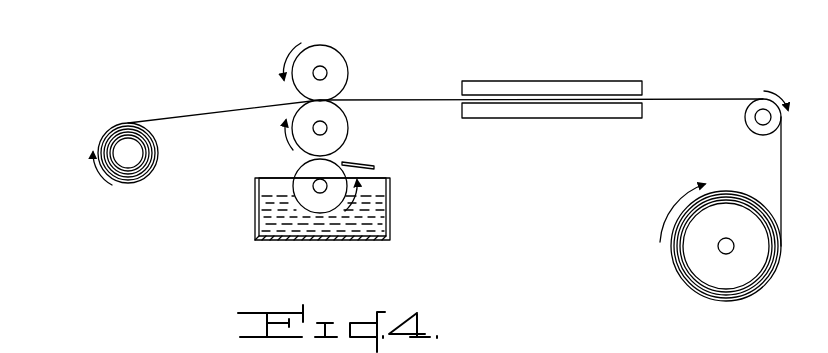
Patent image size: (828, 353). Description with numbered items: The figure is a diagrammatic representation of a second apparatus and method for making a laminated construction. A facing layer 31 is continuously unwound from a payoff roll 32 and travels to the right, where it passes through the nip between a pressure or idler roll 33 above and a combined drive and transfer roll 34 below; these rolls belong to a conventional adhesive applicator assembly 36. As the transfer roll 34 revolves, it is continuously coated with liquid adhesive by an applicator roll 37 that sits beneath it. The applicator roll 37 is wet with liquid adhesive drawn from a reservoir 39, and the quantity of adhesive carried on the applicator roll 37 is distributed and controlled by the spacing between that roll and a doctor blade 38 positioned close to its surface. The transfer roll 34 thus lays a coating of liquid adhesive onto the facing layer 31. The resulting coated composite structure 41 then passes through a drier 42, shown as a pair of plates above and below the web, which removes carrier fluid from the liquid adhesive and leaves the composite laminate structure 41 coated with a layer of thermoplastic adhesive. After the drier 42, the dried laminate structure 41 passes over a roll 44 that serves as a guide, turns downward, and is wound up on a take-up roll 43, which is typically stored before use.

The facing layer 31 is at (183, 117).
The payoff roll 32 is at (128, 187).
The pressure or idler roll 33 is at (348, 62).
The combined drive and transfer roll 34 is at (349, 128).
The adhesive applicator assembly 36 is at (404, 212).
The applicator roll 37 is at (300, 167).
The doctor blade 38 is at (374, 168).
The reservoir 39 is at (287, 229).
The composite structure 41 is at (700, 99).
The drier 42 is at (566, 118).
The take-up roll 43 is at (672, 266).
The guide roll 44 is at (745, 122).